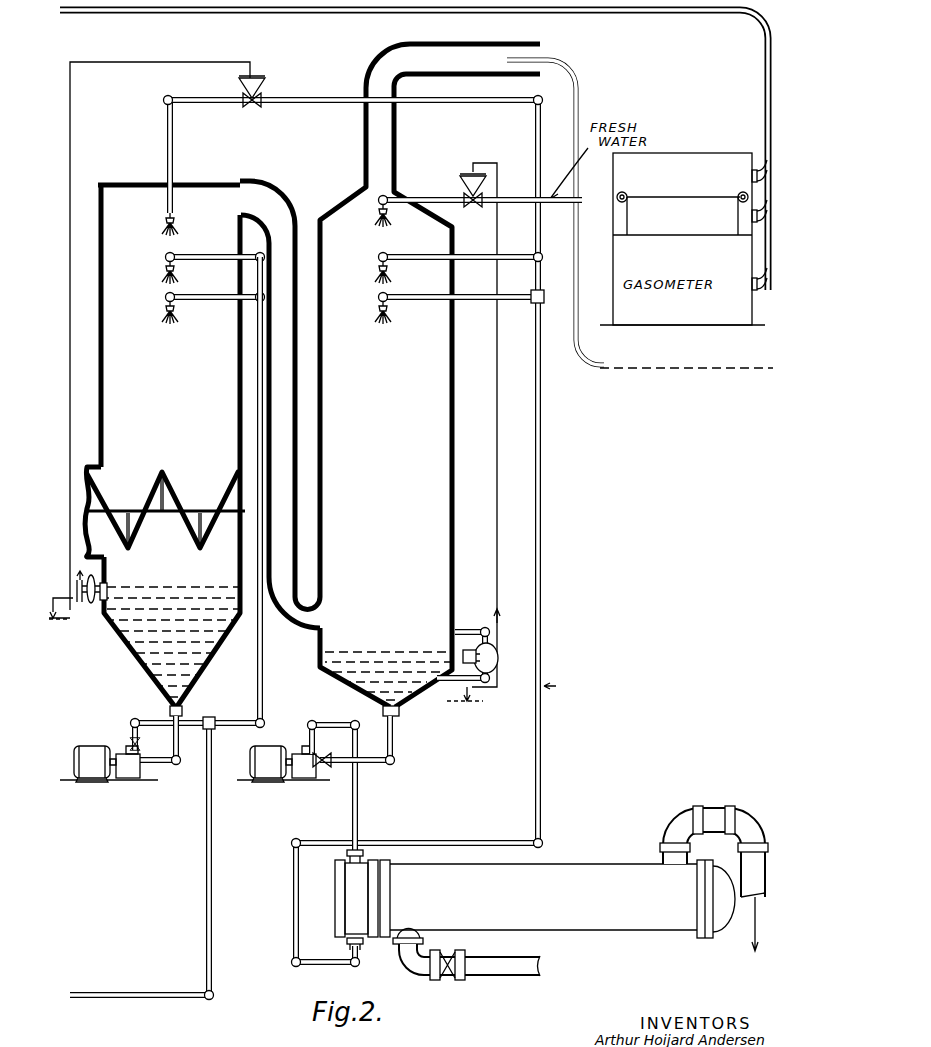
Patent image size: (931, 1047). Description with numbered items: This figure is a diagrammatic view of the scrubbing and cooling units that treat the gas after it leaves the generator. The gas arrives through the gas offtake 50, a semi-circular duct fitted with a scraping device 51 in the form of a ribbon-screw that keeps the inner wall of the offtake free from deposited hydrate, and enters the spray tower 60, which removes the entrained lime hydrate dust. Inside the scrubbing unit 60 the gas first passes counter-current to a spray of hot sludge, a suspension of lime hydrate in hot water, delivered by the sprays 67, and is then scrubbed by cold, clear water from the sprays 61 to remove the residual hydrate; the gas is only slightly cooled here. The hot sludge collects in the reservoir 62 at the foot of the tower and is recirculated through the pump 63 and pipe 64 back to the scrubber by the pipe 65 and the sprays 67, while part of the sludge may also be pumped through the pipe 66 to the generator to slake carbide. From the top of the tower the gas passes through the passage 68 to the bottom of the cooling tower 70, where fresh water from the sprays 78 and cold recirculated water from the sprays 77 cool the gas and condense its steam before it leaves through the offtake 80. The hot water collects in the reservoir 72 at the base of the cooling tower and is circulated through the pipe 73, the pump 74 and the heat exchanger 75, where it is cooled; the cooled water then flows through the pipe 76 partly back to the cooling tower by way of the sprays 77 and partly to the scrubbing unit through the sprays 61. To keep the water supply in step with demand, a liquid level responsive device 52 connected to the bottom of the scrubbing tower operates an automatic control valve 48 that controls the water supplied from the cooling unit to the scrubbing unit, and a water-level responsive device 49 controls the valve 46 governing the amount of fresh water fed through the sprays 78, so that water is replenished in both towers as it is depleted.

The valve 46 is at (465, 176).
The automatic control valve 48 is at (256, 79).
The water-level responsive device 49 is at (498, 657).
The gas offtake 50 is at (100, 466).
The scraping device 51 is at (172, 492).
The liquid level responsive device 52 is at (98, 606).
The spray tower 60 is at (100, 347).
The sprays 61 is at (163, 219).
The reservoir 62 is at (132, 646).
The pump 63 is at (132, 783).
The pipe 64 is at (179, 755).
The pipe 65 is at (267, 691).
The pipe 66 is at (206, 820).
The sprays 67 is at (167, 312).
The passage 68 is at (275, 198).
The cooling tower 70 is at (455, 386).
The reservoir 72 is at (457, 612).
The pipe 73 is at (394, 737).
The pump 74 is at (305, 783).
The heat exchanger 75 is at (580, 863).
The pipe 76 is at (543, 549).
The sprays 77 is at (375, 306).
The sprays 78 is at (374, 223).
The offtake 80 is at (428, 42).